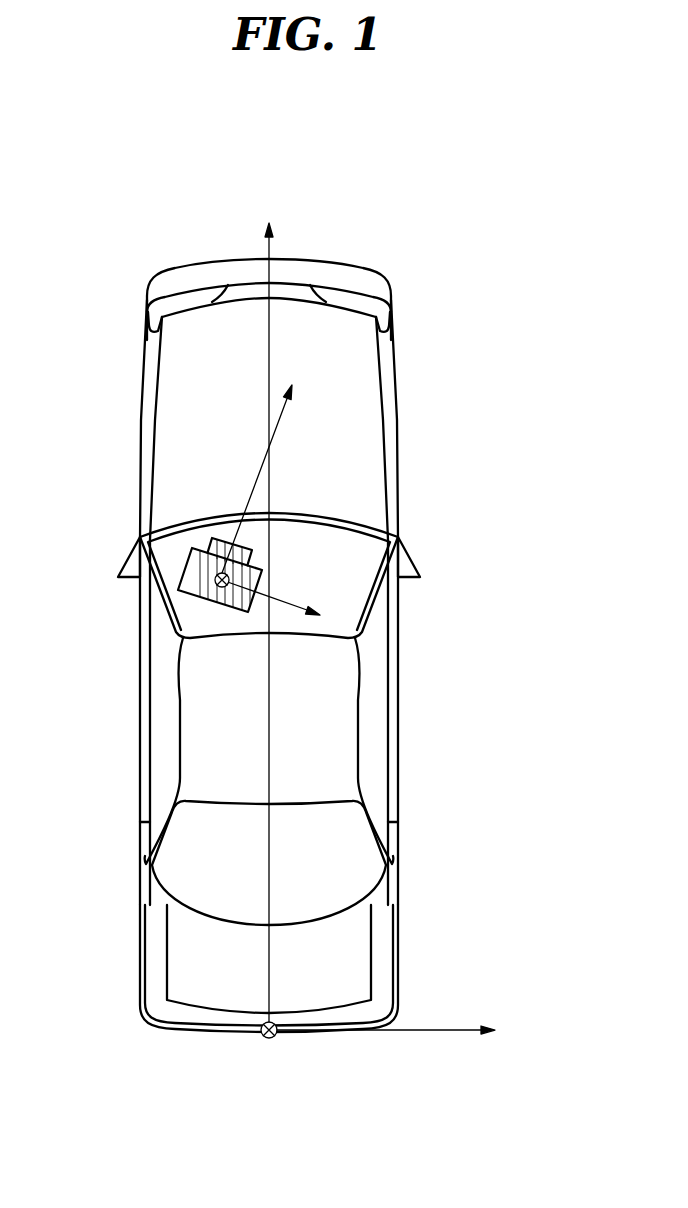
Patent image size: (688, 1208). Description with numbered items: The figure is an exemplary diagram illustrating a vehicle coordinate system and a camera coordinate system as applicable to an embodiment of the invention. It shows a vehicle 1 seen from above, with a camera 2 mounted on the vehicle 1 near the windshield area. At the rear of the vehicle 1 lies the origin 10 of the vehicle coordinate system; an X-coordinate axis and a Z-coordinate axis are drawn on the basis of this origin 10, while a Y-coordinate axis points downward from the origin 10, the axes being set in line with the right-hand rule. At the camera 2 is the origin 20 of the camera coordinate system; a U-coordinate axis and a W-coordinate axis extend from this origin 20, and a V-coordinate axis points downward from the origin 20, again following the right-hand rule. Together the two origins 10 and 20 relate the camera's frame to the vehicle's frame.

The vehicle 1 is at (372, 277).
The camera 2 is at (185, 557).
The origin of camera coordinate system 20 is at (215, 580).
The origin of vehicle coordinate system 10 is at (248, 1029).